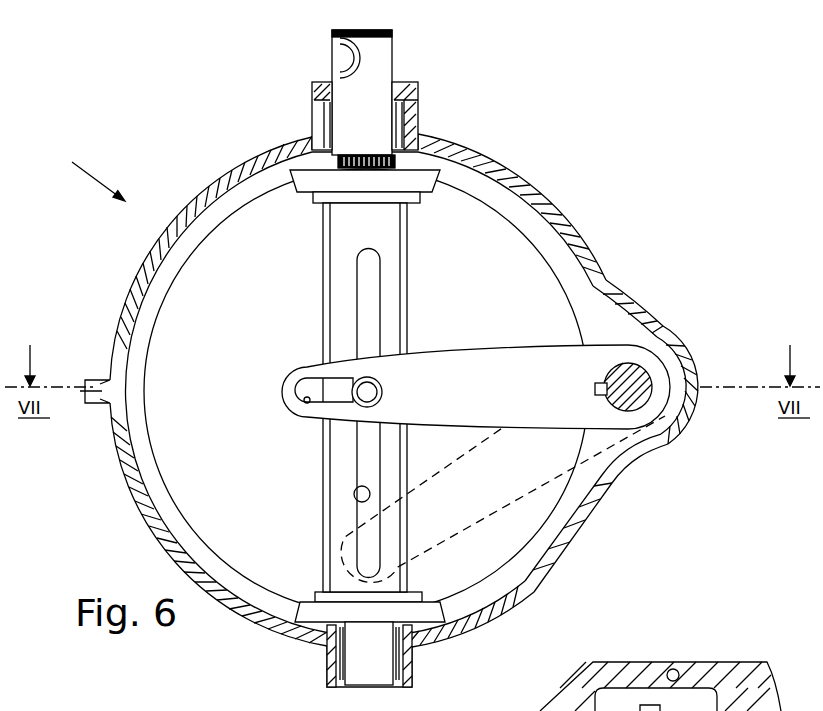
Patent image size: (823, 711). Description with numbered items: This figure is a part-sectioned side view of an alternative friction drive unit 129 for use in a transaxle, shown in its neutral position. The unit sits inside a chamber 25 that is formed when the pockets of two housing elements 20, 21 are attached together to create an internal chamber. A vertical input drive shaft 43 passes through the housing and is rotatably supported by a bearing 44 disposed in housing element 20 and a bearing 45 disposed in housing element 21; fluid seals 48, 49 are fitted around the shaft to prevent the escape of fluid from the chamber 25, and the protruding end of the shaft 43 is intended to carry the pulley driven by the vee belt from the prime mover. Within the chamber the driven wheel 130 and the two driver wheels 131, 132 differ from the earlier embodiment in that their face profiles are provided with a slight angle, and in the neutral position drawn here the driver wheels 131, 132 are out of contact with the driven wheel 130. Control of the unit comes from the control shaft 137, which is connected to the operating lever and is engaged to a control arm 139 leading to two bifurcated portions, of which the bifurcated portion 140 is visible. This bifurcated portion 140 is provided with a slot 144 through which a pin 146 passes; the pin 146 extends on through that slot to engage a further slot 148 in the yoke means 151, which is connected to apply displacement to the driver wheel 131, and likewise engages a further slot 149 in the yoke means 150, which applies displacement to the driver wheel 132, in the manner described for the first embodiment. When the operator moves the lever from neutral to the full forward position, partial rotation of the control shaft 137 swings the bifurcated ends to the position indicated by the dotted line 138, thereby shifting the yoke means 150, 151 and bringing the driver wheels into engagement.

The housing element 20 is at (560, 229).
The housing element 21 is at (536, 582).
The chamber 25 is at (133, 463).
The vertical input drive shaft 43 is at (370, 73).
The bearing 44 is at (322, 113).
The bearing 45 is at (403, 657).
The fluid seal 48 is at (418, 90).
The fluid seal 49 is at (342, 686).
The friction drive unit 129 is at (81, 168).
The driven wheel 130 is at (233, 326).
The driver wheel 131 is at (424, 194).
The driver wheel 132 is at (338, 611).
The control shaft 137 is at (641, 386).
The dotted line 138 is at (467, 528).
The control arm 139 is at (545, 360).
The bifurcated portion 140 is at (297, 387).
The slot 144 is at (306, 401).
The pin 146 is at (373, 391).
The slot 148 is at (376, 300).
The slot 149 is at (362, 498).
The yoke means 150 is at (345, 456).
The yoke means 151 is at (345, 236).